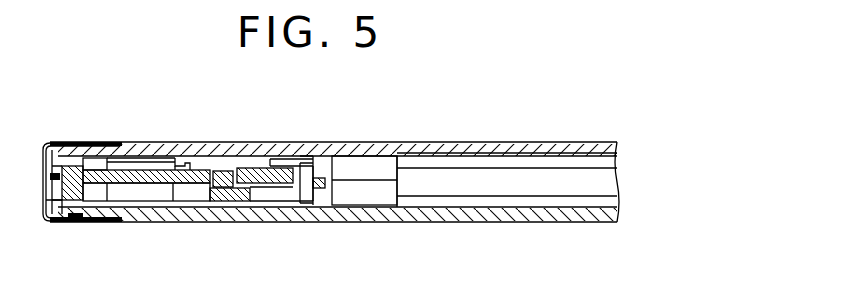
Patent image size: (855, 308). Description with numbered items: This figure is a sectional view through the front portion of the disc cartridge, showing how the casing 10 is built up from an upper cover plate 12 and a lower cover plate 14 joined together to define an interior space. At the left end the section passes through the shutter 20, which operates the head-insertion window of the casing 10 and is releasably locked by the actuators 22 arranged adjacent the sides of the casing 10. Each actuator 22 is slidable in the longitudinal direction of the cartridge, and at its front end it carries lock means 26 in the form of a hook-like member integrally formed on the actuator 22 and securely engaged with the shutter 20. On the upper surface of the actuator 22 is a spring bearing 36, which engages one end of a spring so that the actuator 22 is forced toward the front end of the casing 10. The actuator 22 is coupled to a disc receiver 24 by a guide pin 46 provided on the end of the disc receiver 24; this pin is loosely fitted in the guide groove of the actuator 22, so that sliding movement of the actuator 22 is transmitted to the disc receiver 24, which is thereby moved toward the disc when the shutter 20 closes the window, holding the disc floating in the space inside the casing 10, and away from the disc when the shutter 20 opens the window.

The casing 10 is at (492, 137).
The upper cover plate 12 is at (350, 149).
The lower cover plate 14 is at (312, 216).
The shutter 20 is at (70, 143).
The actuator 22 is at (125, 170).
The disc receiver 24 is at (230, 202).
The lock means 26 is at (55, 222).
The spring bearing 36 is at (178, 162).
The guide pin 46 is at (225, 171).